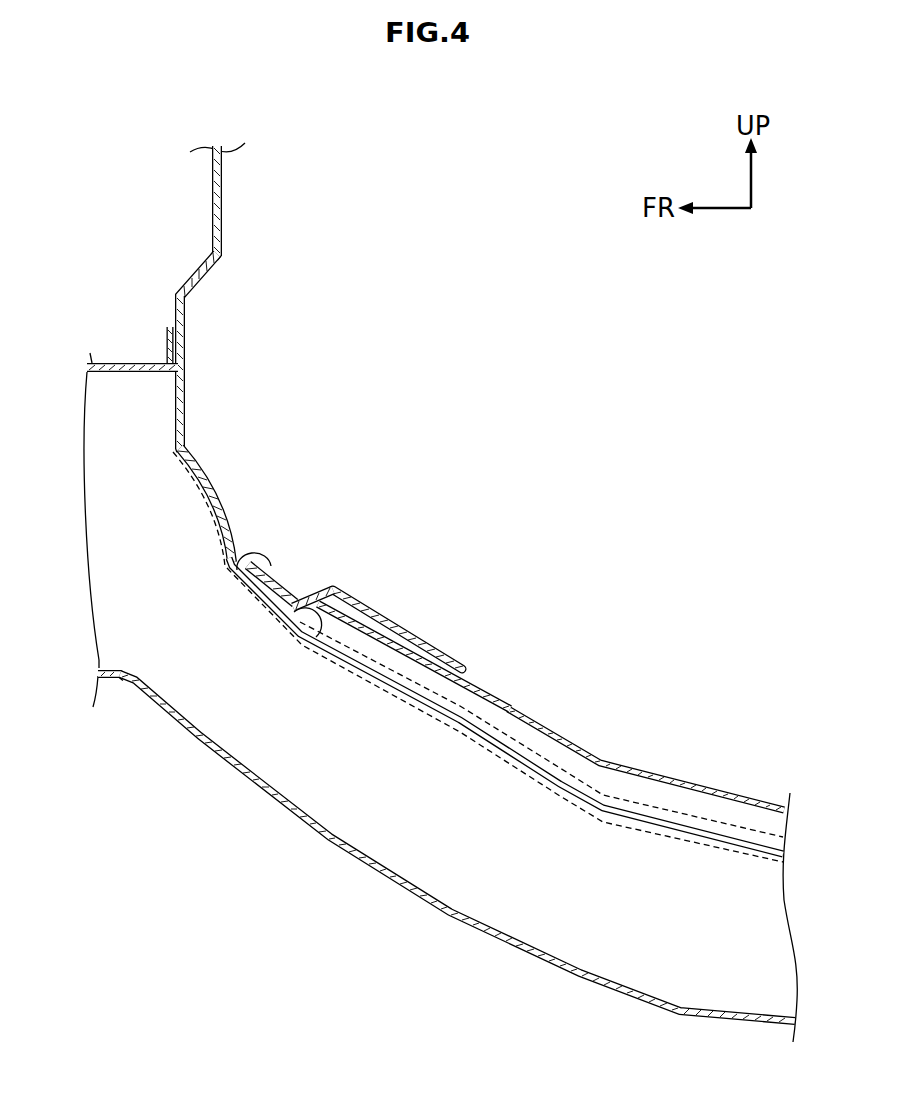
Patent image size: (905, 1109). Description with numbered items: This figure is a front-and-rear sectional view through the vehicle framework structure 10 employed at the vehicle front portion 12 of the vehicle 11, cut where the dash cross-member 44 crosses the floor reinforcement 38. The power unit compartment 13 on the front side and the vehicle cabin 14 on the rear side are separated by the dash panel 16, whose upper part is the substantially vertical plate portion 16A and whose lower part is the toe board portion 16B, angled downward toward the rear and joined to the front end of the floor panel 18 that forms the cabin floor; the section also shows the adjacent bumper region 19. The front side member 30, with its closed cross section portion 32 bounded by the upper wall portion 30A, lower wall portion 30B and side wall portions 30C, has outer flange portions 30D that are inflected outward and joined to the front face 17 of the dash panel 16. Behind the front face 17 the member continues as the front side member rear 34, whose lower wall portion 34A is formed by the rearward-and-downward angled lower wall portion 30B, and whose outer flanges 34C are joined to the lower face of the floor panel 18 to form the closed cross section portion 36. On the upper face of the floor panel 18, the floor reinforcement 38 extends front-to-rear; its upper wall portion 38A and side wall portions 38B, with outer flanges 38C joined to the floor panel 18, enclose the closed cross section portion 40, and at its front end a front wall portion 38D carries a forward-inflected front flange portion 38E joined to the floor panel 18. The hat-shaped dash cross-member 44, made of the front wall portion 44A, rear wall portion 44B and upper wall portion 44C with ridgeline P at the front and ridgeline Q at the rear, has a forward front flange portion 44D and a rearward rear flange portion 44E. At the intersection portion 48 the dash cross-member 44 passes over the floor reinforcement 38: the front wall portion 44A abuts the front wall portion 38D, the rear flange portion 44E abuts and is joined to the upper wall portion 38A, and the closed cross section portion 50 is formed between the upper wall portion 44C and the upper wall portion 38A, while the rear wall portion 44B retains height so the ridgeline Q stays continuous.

The vehicle framework structure 10 is at (540, 533).
The vehicle 11 is at (97, 150).
The vehicle front portion 12 is at (108, 163).
The power unit compartment 13 is at (88, 205).
The vehicle cabin 14 is at (512, 282).
The dash panel 16 is at (227, 354).
The vertical plate portion 16A is at (207, 283).
The toe board portion 16B is at (213, 510).
The front face 17 is at (211, 229).
The floor panel 18 is at (816, 896).
The bumper member 19 is at (792, 856).
The front side member 30 is at (103, 512).
The upper wall portion 30A is at (99, 360).
The lower wall portion 30B is at (112, 680).
The side wall portions 30C is at (123, 617).
The outer flange portions 30D is at (167, 344).
The closed cross section portion 32 is at (130, 459).
The front side member rear 34 is at (457, 737).
The lower wall portion 34A is at (445, 909).
The outer flanges 34C is at (630, 832).
The closed cross section portion 36 is at (687, 930).
The floor reinforcement 38 is at (470, 705).
The upper wall portion 38A is at (692, 788).
The side wall portions 38B is at (730, 820).
The outer flanges 38C is at (548, 766).
The front wall portion 38D is at (312, 636).
The front flange portion 38E is at (232, 556).
The closed cross section portion 40 is at (590, 762).
The dash cross-member 44 is at (421, 598).
The front wall portion 44A is at (306, 600).
The rear wall portion 44B is at (470, 675).
The upper wall portion 44C is at (400, 624).
The front flange portion 44D is at (280, 588).
The rear flange portion 44E is at (493, 688).
The intersection portion 48 is at (365, 592).
The closed cross section portion 50 is at (437, 638).
The ridgeline P is at (341, 586).
The ridgeline Q is at (468, 672).